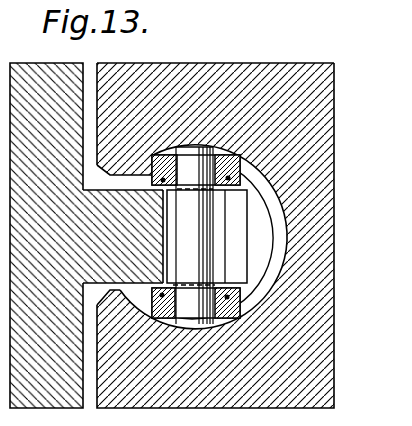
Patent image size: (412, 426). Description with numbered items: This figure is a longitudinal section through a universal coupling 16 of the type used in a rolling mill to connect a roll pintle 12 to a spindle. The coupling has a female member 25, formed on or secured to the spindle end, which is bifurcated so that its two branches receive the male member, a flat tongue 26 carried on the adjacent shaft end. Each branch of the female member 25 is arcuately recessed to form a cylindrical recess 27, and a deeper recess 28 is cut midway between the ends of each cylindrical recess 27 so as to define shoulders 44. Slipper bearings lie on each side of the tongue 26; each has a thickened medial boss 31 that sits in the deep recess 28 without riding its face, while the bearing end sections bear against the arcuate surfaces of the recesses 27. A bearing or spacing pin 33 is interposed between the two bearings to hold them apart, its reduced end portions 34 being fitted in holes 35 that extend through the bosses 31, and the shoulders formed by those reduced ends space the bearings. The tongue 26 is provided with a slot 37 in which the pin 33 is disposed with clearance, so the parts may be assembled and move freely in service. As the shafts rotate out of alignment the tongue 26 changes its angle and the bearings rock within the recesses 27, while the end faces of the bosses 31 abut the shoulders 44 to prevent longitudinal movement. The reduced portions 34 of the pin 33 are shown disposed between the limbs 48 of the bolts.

The end portion or pintle 12 is at (47, 72).
The universal coupling 16 is at (202, 61).
The female member 25 is at (281, 72).
The tongue 26 is at (124, 203).
The arcuate recess 27 is at (265, 207).
The deep recess 28 is at (290, 168).
The boss 31 is at (240, 156).
The bearing or spacing pin 33 is at (168, 253).
The reduced end portion 34 is at (186, 148).
The hole 35 is at (213, 145).
The slot 37 is at (163, 230).
The shoulder 44 is at (278, 243).
The limb 48 is at (163, 180).